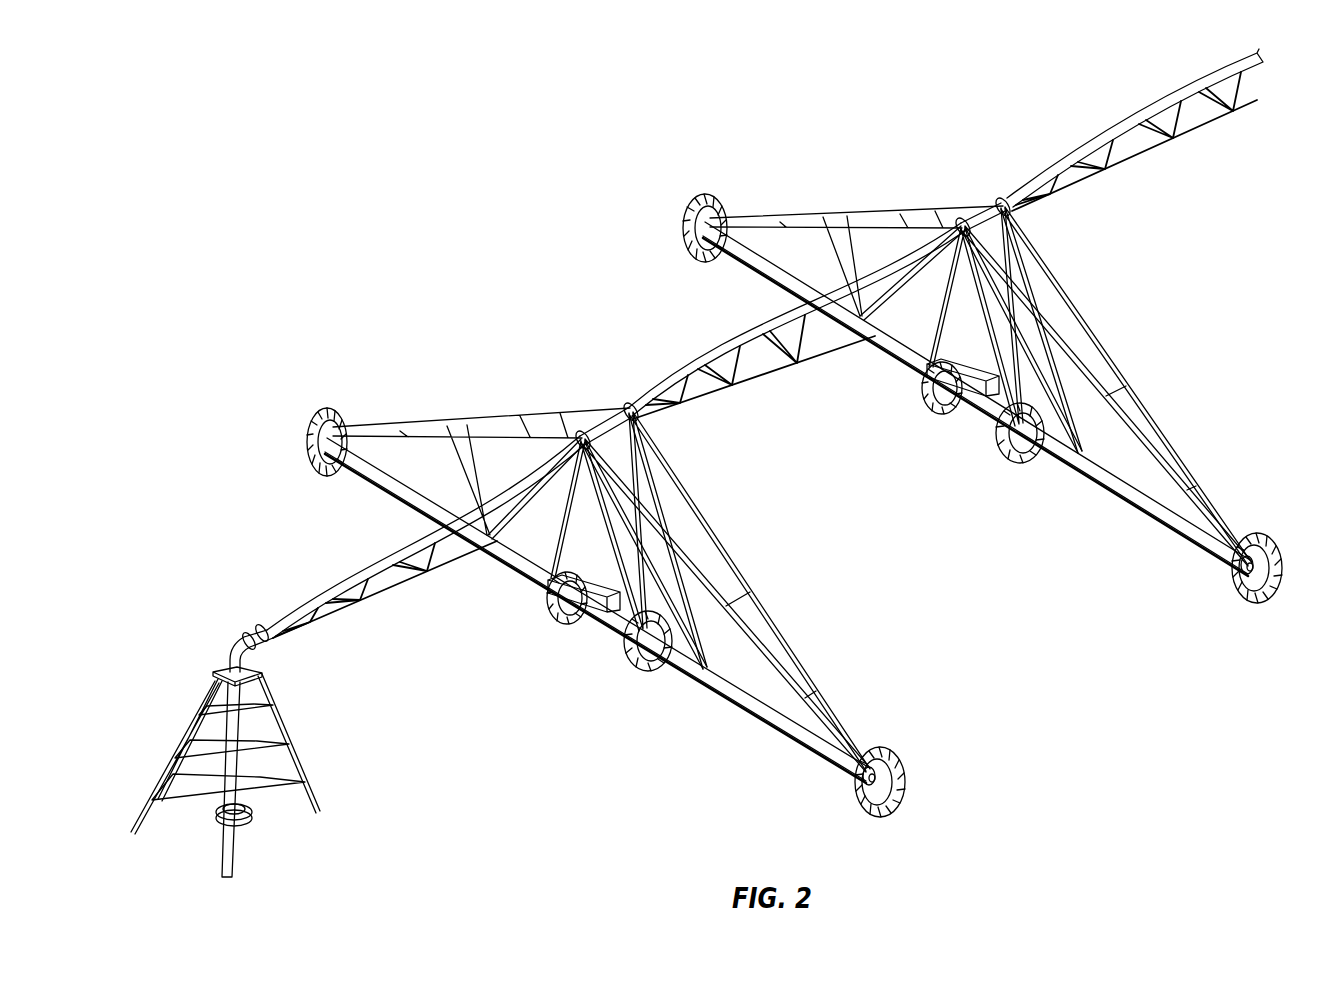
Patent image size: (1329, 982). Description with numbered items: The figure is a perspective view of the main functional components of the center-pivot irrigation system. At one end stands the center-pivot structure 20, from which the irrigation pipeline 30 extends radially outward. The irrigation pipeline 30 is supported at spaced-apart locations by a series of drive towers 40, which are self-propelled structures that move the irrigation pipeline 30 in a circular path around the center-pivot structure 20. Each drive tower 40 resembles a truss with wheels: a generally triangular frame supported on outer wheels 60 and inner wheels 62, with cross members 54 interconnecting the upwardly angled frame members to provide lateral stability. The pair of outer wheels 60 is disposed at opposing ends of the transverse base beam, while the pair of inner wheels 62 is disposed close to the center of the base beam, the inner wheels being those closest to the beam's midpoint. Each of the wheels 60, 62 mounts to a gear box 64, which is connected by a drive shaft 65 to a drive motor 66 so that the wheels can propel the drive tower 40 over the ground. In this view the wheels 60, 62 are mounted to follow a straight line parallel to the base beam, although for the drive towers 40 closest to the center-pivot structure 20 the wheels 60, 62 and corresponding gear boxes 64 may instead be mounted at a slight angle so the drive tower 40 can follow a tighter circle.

The center-pivot structure 20 is at (300, 770).
The irrigation pipeline 30 is at (1158, 96).
The drive tower 40 is at (808, 625).
The cross member 54 is at (663, 522).
The outer wheel 60 is at (318, 468).
The inner wheel 62 is at (550, 608).
The gear box 64 is at (866, 786).
The drive shaft 65 is at (728, 707).
The drive motor 66 is at (590, 620).